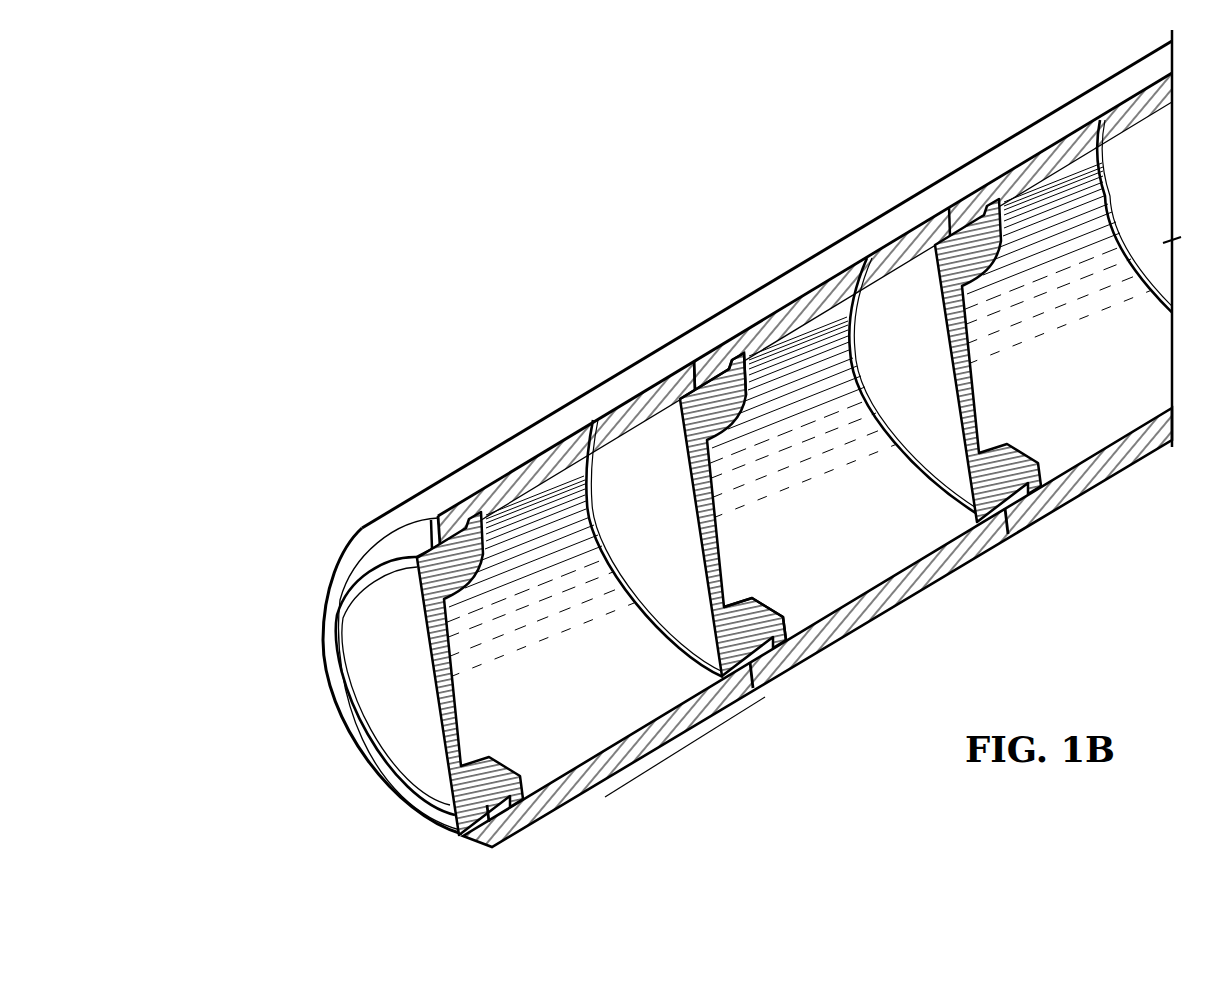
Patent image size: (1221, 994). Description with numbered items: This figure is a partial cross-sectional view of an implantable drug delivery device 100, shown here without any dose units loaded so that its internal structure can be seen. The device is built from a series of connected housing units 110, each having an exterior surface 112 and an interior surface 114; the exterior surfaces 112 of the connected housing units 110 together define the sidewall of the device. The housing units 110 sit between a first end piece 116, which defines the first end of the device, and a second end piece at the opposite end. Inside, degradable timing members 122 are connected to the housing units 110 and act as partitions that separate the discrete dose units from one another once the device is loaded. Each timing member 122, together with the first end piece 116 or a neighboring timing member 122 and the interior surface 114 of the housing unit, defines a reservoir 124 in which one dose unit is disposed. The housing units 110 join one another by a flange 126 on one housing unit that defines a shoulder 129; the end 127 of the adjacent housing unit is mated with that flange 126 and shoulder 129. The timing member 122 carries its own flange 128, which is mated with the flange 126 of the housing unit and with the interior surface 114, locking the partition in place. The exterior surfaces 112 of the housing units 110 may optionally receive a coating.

The drug delivery device 100 is at (455, 272).
The housing unit 110 is at (486, 445).
The exterior surface 112 is at (424, 490).
The interior surface 114 is at (553, 747).
The first end piece 116 is at (365, 668).
The degradable timing member 122 is at (645, 497).
The reservoir 124 is at (612, 792).
The flange 126 is at (760, 672).
The end 127 is at (695, 387).
The flange 128 is at (800, 628).
The shoulder 129 is at (721, 372).